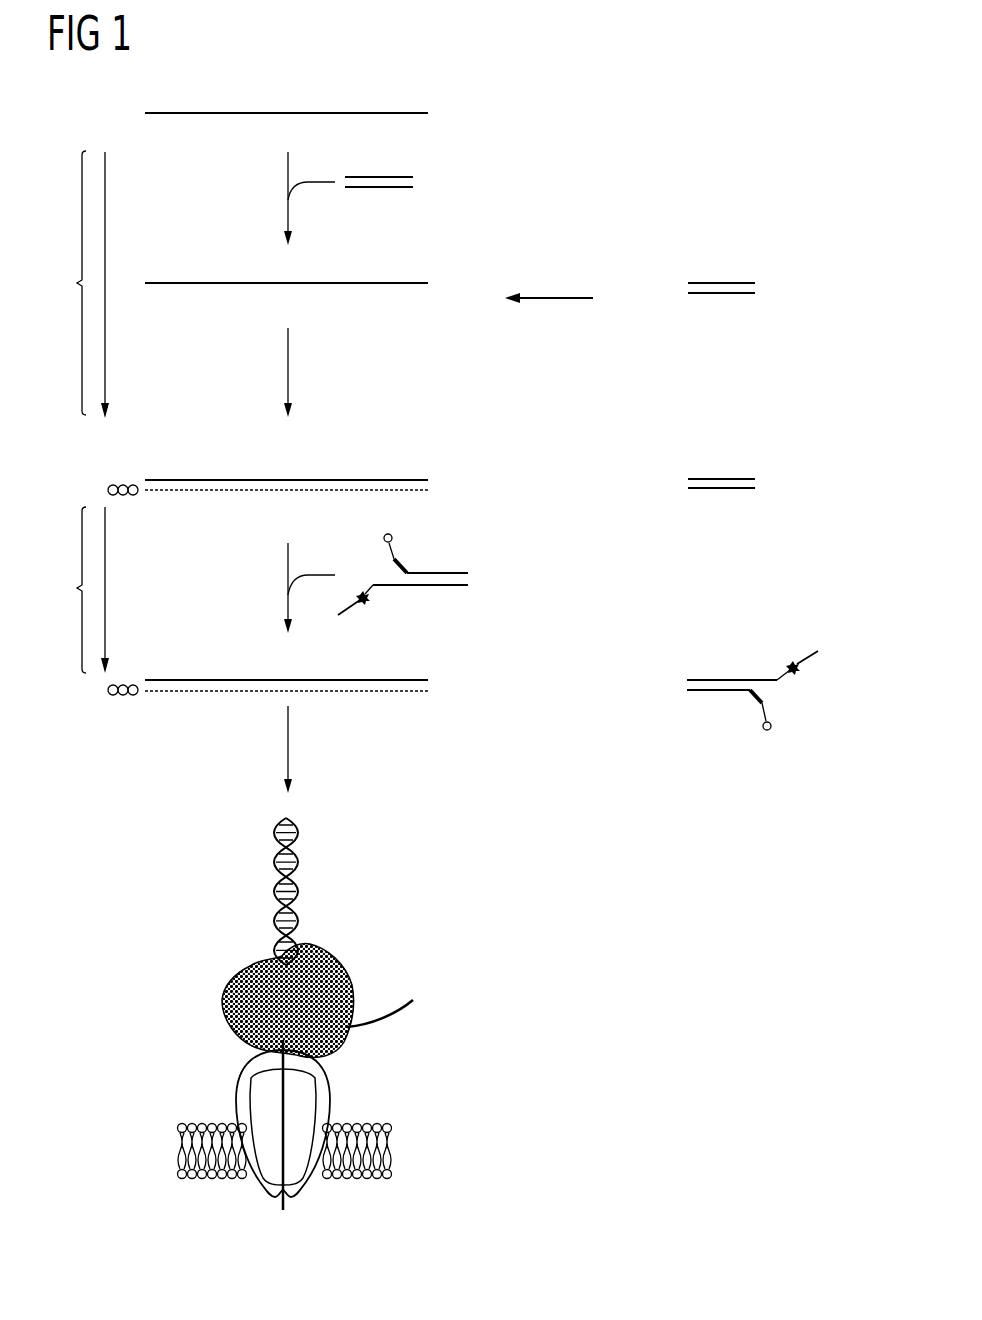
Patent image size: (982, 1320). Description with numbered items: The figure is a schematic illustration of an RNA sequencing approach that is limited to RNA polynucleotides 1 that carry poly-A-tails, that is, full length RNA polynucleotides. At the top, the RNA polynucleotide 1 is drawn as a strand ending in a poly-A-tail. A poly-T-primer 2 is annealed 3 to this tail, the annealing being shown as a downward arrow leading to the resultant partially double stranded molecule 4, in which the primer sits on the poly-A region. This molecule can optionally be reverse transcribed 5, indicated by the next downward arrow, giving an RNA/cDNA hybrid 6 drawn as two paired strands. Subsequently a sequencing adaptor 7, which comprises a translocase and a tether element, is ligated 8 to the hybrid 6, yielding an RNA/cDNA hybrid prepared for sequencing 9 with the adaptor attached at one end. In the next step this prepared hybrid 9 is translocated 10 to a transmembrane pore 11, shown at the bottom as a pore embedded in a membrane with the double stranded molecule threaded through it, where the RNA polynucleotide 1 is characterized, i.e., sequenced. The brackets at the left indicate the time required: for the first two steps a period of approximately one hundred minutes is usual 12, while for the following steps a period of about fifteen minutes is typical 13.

The RNA polynucleotide 1 is at (395, 105).
The poly-T-primer 2 is at (488, 178).
The annealing step 3 is at (288, 173).
The partially double stranded molecule 4 is at (760, 290).
The reverse transcription step 5 is at (288, 366).
The RNA/cDNA hybrid 6 is at (760, 487).
The sequencing adaptor 7 is at (470, 582).
The ligation step 8 is at (288, 562).
The RNA/cDNA hybrid prepared for sequencing 9 is at (773, 693).
The translocation step 10 is at (288, 748).
The transmembrane pore 11 is at (342, 1093).
The time period for the first two steps 12 is at (78, 284).
The time period for the next steps 13 is at (78, 588).